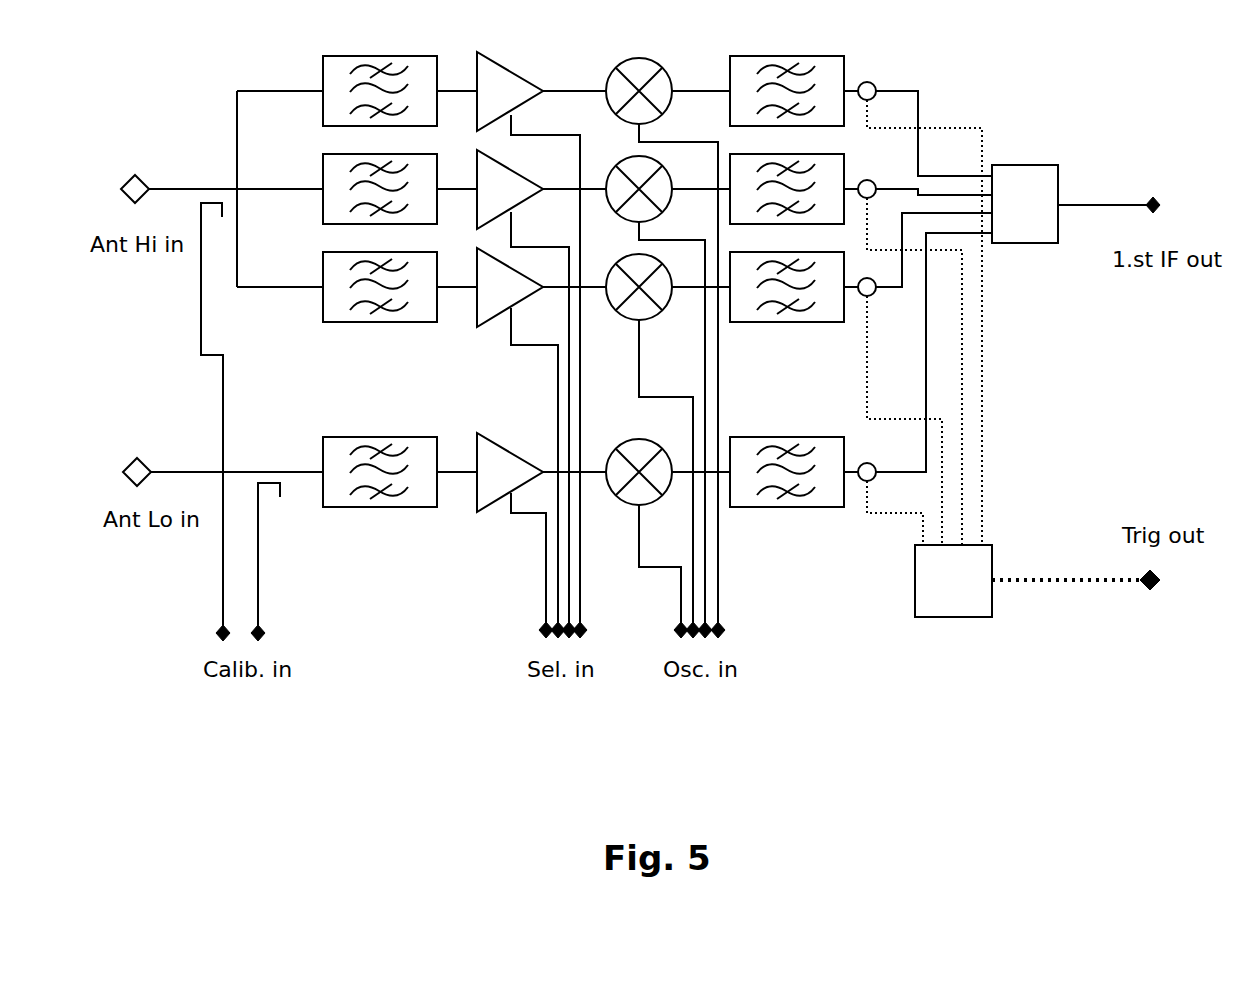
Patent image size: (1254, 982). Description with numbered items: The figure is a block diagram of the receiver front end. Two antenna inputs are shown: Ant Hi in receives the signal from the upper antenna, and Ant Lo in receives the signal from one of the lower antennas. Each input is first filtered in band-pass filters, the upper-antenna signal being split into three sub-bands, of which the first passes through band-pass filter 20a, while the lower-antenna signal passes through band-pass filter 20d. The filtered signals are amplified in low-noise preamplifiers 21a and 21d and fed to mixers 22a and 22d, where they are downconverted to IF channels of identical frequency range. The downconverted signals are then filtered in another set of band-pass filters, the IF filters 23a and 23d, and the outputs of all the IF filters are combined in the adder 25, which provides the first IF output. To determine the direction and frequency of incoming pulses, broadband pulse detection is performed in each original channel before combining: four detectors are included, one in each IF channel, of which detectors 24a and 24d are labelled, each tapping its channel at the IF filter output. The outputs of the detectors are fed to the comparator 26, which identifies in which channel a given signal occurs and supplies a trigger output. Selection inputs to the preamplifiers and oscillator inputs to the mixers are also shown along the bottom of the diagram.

The band-pass filter 20a is at (380, 72).
The low-noise preamplifier 21a is at (510, 81).
The mixer 22a is at (639, 70).
The band-pass filter 23a is at (787, 71).
The detector 24a is at (885, 71).
The band-pass filter 20d is at (380, 454).
The low-noise preamplifier 21d is at (510, 464).
The mixer 22d is at (637, 458).
The band-pass filter 23d is at (787, 454).
The detector 24d is at (887, 459).
The adder 25 is at (1025, 204).
The comparator 26 is at (953, 581).